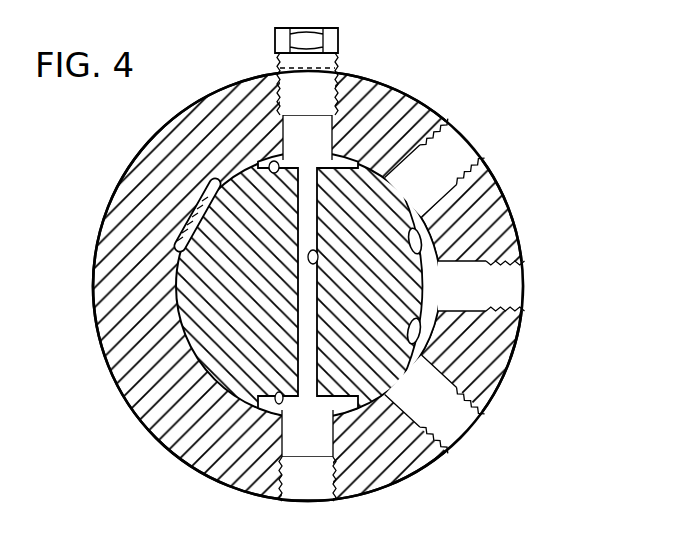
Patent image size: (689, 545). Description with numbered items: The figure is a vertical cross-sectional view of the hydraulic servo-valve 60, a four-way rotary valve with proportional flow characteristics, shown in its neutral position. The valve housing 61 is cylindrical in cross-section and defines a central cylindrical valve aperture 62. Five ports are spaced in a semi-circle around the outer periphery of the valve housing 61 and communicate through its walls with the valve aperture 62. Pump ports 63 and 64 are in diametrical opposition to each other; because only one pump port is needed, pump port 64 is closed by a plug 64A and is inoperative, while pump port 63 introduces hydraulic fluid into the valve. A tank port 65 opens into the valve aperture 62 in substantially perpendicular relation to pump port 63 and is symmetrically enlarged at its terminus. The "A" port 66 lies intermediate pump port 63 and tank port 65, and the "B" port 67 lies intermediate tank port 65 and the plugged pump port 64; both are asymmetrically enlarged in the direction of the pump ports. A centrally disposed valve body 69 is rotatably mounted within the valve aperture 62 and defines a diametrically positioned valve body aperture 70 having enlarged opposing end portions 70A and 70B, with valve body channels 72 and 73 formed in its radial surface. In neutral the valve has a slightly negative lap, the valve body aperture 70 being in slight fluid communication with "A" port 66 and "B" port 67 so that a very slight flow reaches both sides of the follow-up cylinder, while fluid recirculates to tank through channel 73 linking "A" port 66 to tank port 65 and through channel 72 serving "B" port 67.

The hydraulic servo-valve 60 is at (195, 86).
The valve housing 61 is at (128, 198).
The central cylindrical valve aperture 62 is at (217, 182).
The pump port 63 is at (287, 483).
The pump port 64 is at (286, 93).
The plug 64A is at (324, 27).
The tank port 65 is at (522, 280).
The "A" port 66 is at (456, 430).
The "B" port 67 is at (462, 158).
The valve body 69 is at (270, 297).
The valve body aperture 70 is at (293, 285).
The enlarged end portion 70A is at (281, 173).
The enlarged end portion 70B is at (281, 391).
The valve body channel 72 is at (410, 252).
The valve body channel 73 is at (408, 334).